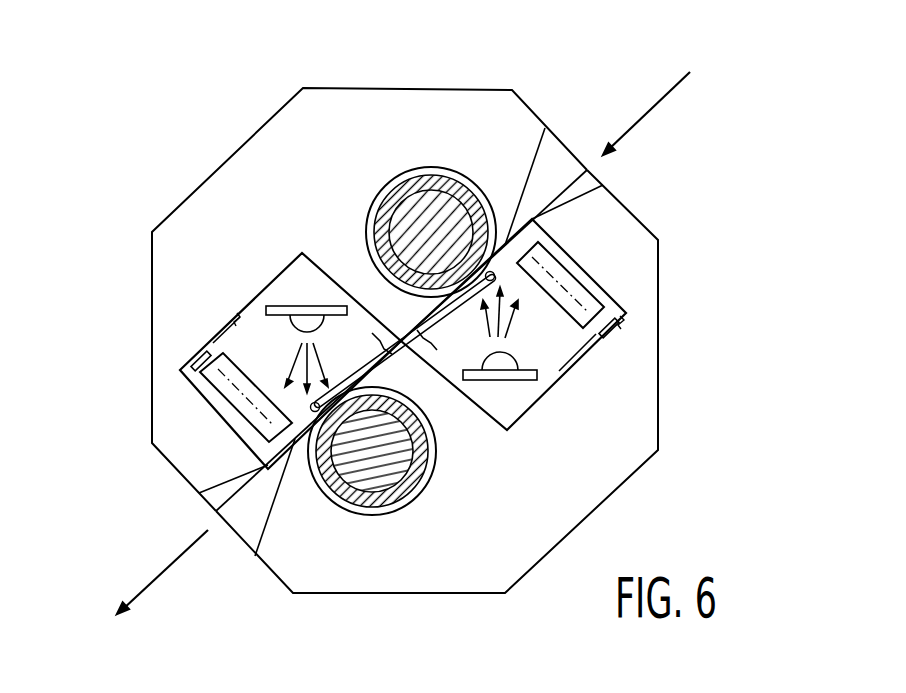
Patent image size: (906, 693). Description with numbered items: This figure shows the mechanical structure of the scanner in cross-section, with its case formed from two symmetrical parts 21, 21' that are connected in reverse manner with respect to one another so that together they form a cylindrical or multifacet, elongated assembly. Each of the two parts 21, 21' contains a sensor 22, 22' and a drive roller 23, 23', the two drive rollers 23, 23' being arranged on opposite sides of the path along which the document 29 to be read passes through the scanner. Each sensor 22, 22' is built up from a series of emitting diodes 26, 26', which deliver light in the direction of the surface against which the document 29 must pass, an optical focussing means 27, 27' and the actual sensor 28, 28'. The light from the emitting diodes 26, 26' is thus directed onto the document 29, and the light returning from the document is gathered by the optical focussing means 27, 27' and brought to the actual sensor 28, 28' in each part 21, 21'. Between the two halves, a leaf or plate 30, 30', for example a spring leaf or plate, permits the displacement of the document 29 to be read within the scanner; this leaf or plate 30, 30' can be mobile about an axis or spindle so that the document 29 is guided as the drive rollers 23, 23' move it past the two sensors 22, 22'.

The symmetrical part 21 is at (369, 271).
The symmetrical part 21' is at (484, 381).
The sensor 22 is at (233, 363).
The sensor 22' is at (576, 305).
The drive roller 23 is at (431, 164).
The drive roller 23' is at (372, 519).
The emitting diodes 26 is at (207, 317).
The emitting diodes 26' is at (607, 355).
The optical focussing means 27 is at (178, 397).
The optical focussing means 27' is at (634, 285).
The actual sensor 28 is at (141, 338).
The actual sensor 28' is at (675, 334).
The document 29 is at (656, 104).
The spring leaf or plate 30 is at (350, 301).
The spring leaf or plate 30' is at (456, 399).